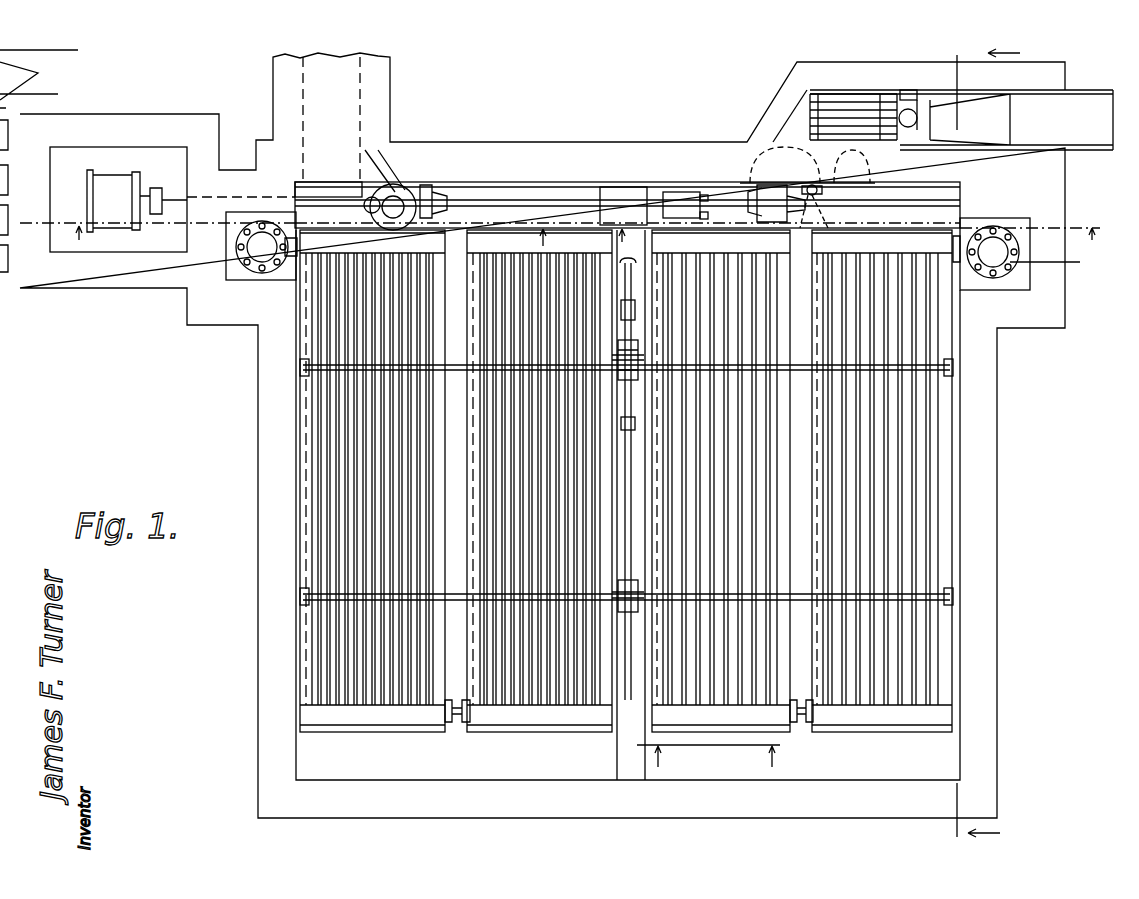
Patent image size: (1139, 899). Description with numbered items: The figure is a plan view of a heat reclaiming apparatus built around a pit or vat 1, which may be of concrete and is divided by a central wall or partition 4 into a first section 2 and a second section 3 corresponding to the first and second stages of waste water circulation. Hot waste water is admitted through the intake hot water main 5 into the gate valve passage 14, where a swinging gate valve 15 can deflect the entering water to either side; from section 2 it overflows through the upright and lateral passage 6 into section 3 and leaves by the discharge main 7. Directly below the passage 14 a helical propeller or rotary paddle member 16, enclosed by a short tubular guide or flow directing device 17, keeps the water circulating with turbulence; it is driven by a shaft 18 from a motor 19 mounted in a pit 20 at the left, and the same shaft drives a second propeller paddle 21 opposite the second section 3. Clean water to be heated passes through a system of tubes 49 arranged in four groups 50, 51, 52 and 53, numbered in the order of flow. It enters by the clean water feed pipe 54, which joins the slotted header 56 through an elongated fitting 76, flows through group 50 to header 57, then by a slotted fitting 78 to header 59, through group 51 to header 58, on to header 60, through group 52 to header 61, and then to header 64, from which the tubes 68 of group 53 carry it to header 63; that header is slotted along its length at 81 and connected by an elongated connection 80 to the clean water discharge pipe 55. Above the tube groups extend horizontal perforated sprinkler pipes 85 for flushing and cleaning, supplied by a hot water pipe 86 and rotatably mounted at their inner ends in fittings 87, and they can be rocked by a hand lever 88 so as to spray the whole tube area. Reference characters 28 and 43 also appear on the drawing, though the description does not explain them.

The pit or vat 1 is at (258, 398).
The first section 2 is at (905, 760).
The second section 3 is at (330, 825).
The central wall or partition 4 is at (620, 758).
The intake hot water main 5 is at (1010, 135).
The upright and lateral passage 6 is at (632, 228).
The discharge main 7 is at (345, 103).
The gate valve passage 14 is at (760, 170).
The swinging gate valve 15 is at (820, 168).
The propeller or rotary paddle member 16 is at (816, 220).
The tubular guide or flow directing device 17 is at (830, 192).
The shaft 18 is at (545, 200).
The motor 19 is at (140, 180).
The pit 20 is at (58, 275).
The second propeller paddle 21 is at (470, 185).
The grating 28 is at (948, 100).
The section line 43 is at (560, 223).
The system of tubes 49 is at (790, 500).
The first group of tubes 50 is at (355, 460).
The second group of tubes 51 is at (515, 456).
The third group of tubes 52 is at (740, 458).
The fourth group of tubes 53 is at (860, 476).
The clean water inlet or feed pipe 54 is at (240, 268).
The clean water discharge pipe 55 is at (1057, 263).
The header 56 is at (372, 481).
The header 57 is at (372, 715).
The header 58 is at (539, 481).
The header 59 is at (539, 715).
The header 60 is at (721, 481).
The header 61 is at (721, 715).
The header 63 is at (882, 481).
The header 64 is at (882, 715).
The tubes 68 is at (925, 568).
The elongated fitting 76 is at (268, 272).
The fitting 78 is at (458, 722).
The elongated connection 80 is at (995, 255).
The slot 81 is at (950, 244).
The perforated sprinkler pipes 85 is at (797, 368).
The hot water pipe 86 is at (635, 300).
The fittings 87 is at (637, 614).
The hand lever 88 is at (602, 210).